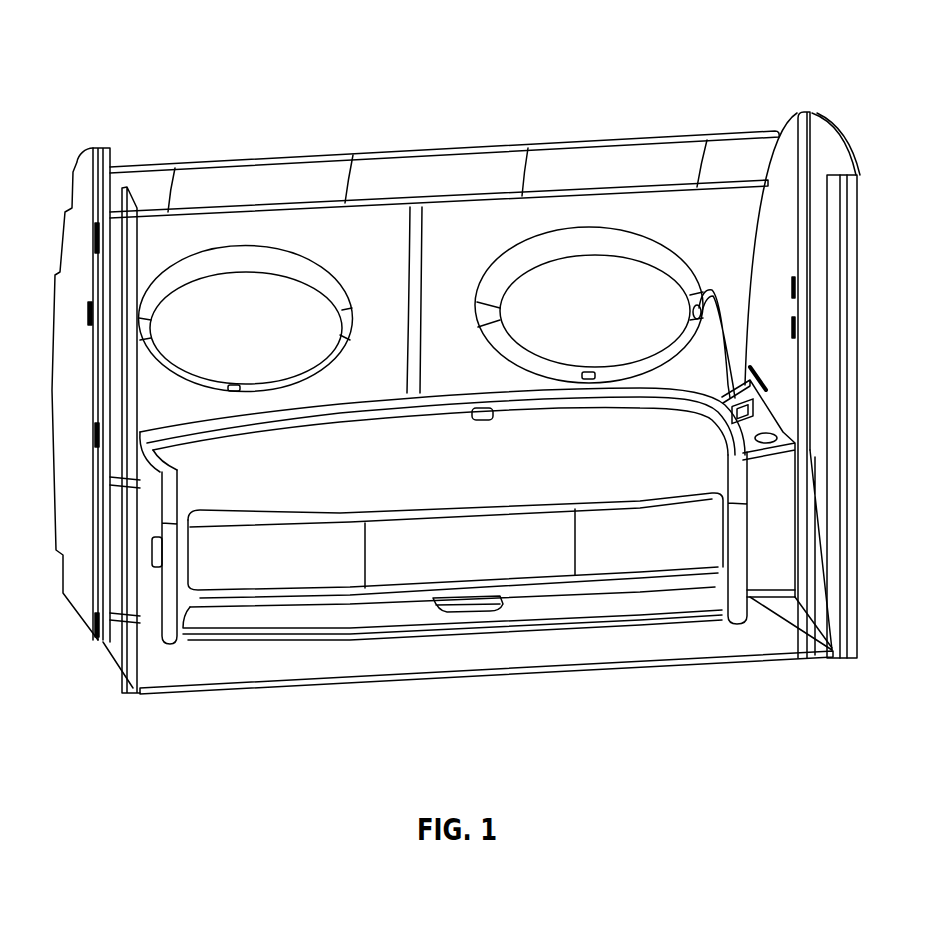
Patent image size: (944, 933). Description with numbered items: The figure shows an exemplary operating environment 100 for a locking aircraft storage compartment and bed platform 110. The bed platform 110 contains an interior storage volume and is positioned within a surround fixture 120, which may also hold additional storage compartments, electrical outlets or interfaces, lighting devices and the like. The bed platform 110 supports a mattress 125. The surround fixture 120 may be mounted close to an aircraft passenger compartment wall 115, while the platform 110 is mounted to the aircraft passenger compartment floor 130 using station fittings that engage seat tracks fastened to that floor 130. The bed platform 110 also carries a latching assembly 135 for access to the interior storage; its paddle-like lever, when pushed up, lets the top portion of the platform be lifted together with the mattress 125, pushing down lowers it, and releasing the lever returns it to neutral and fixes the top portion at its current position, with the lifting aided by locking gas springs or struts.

The operating environment 100 is at (114, 76).
The bed platform 110 is at (357, 617).
The aircraft passenger compartment wall 115 is at (662, 137).
The surround fixture 120 is at (777, 573).
The mattress 125 is at (268, 567).
The aircraft passenger compartment floor 130 is at (685, 645).
The latching assembly 135 is at (478, 612).